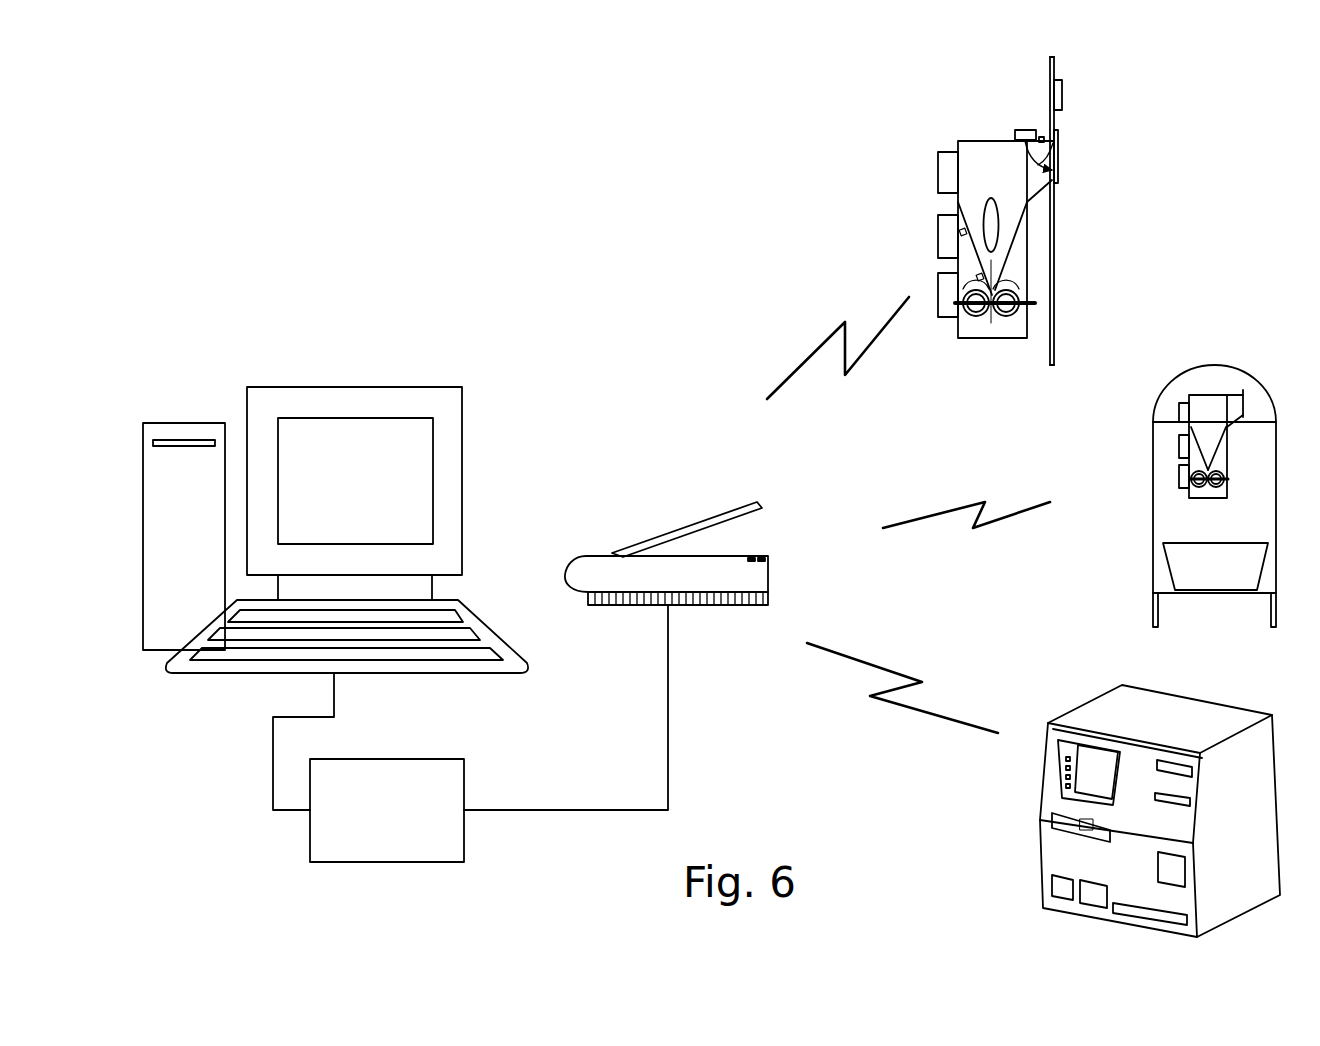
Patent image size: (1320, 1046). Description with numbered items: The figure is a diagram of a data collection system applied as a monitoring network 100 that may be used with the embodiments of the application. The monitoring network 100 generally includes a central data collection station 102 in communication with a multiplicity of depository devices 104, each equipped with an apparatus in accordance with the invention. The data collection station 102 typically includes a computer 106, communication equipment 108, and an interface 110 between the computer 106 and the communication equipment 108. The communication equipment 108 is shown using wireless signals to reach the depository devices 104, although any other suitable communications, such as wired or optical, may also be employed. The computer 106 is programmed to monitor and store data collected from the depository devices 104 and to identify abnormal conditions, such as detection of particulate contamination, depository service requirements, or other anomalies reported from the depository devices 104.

The monitoring network 100 is at (512, 297).
The central data collection station 102 is at (334, 333).
The depository devices 104 is at (1252, 387).
The computer 106 is at (168, 465).
The communication equipment 108 is at (590, 578).
The interface 110 is at (438, 785).